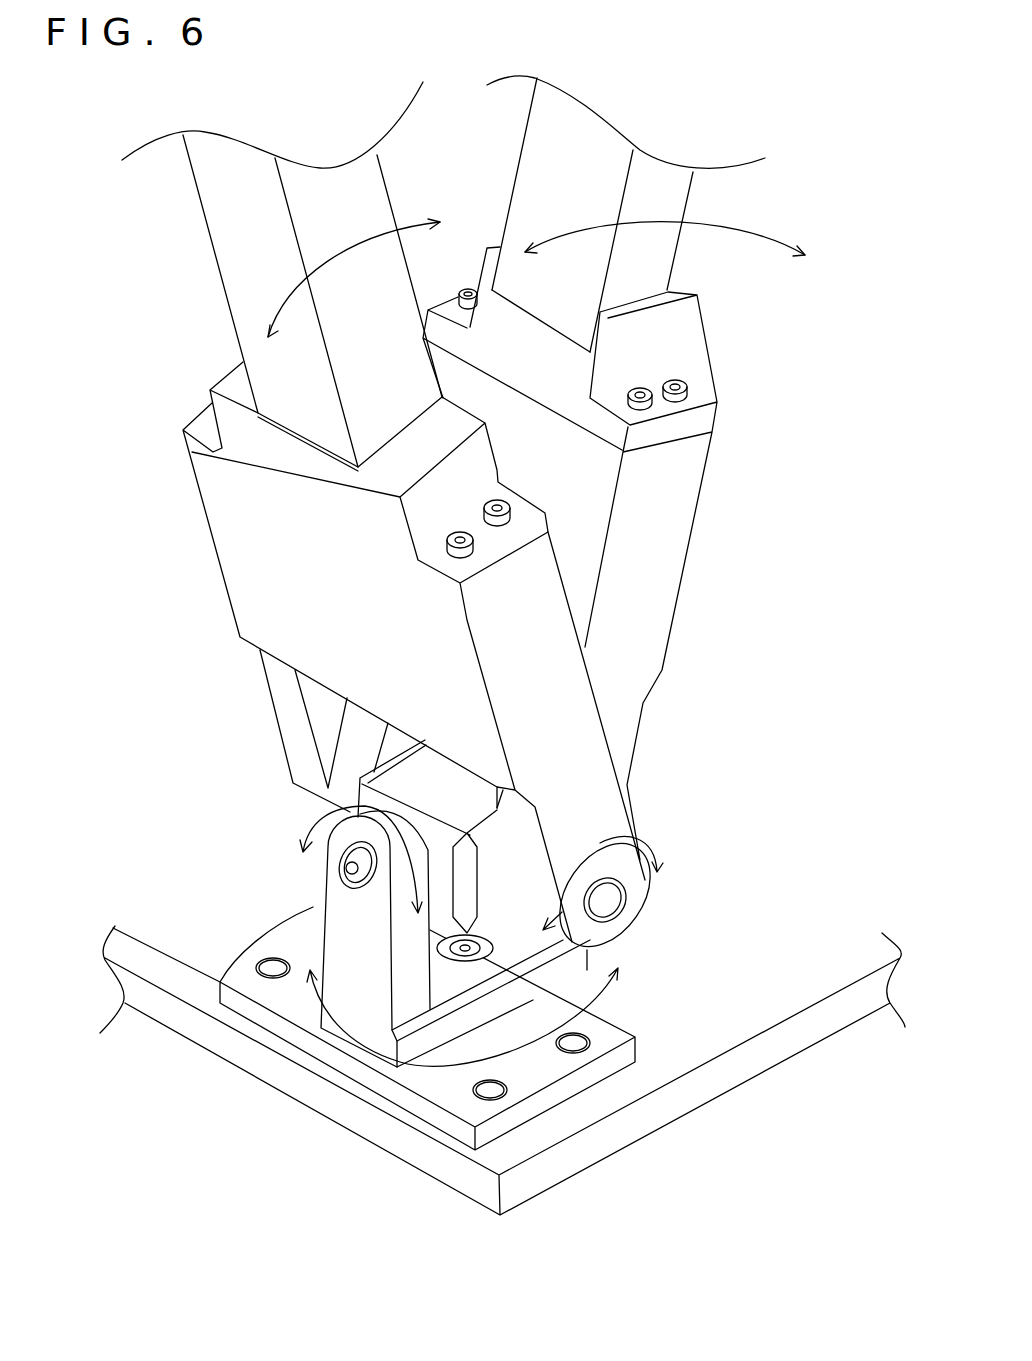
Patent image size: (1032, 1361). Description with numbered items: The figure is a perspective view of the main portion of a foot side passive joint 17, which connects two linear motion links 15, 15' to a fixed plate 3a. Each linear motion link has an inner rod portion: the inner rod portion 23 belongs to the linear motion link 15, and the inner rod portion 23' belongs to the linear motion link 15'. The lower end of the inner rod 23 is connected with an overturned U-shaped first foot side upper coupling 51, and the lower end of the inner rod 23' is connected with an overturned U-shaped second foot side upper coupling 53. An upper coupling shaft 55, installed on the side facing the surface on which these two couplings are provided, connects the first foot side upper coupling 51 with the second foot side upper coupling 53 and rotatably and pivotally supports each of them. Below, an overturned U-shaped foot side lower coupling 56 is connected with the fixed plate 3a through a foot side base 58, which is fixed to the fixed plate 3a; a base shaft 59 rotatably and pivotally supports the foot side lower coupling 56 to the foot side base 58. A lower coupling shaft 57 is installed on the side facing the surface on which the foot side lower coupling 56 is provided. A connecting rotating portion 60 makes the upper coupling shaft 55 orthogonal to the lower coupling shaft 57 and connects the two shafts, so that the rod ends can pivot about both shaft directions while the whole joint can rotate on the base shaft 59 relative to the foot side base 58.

The linear motion link 15 is at (258, 274).
The linear motion link 15' is at (692, 235).
The inner rod portion 23 is at (268, 274).
The inner rod portion 23' is at (684, 235).
The first foot side upper coupling 51 is at (235, 566).
The second foot side upper coupling 53 is at (645, 598).
The foot side passive joint 17 is at (748, 781).
The upper coupling shaft 55 is at (605, 900).
The foot side lower coupling 56 is at (345, 917).
The lower coupling shaft 57 is at (343, 860).
The foot side base 58 is at (390, 1090).
The base shaft 59 is at (478, 952).
The connecting rotating portion 60 is at (483, 862).
The fixed plate 3a is at (747, 1013).